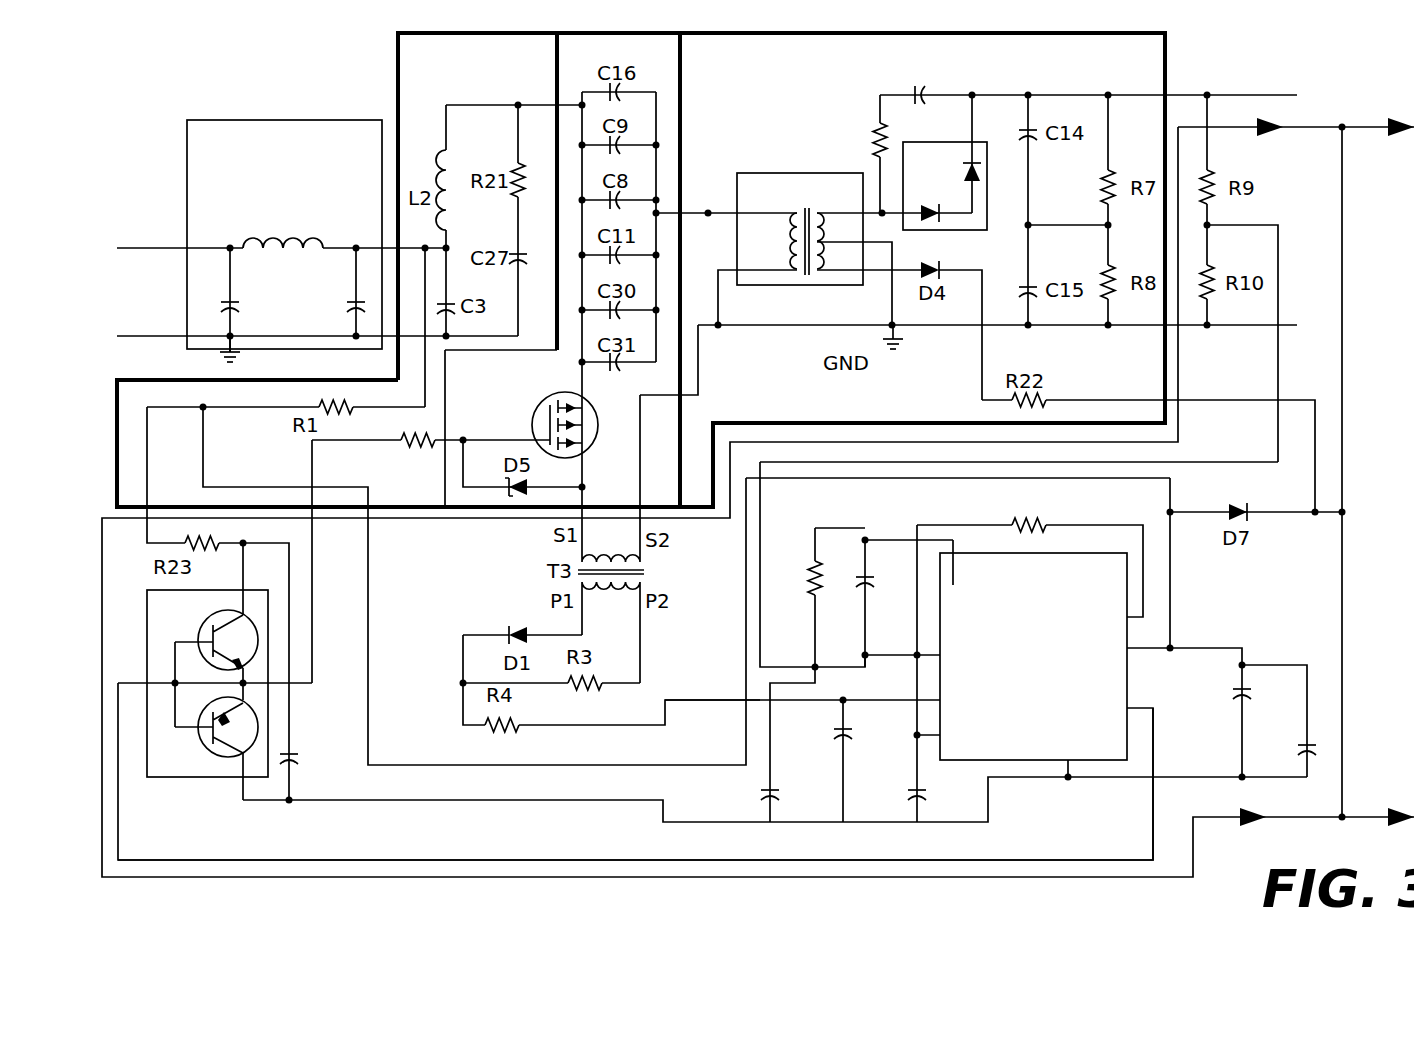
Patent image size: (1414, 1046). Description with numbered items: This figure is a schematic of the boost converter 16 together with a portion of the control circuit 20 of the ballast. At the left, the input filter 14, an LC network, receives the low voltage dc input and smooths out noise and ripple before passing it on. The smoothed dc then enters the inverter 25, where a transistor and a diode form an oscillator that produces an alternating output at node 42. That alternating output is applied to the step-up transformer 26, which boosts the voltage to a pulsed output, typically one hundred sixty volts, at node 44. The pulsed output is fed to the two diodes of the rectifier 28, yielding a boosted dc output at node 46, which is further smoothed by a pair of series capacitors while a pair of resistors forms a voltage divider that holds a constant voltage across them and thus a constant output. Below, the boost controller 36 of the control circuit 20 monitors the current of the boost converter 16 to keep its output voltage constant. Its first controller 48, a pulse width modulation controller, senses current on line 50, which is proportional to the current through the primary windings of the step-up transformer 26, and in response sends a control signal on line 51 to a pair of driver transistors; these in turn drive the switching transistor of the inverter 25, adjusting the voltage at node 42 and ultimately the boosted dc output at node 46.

The input filter 14 is at (317, 216).
The boost converter 16 is at (641, 270).
The control circuit 20 is at (693, 878).
The inverter 25 is at (467, 522).
The step-up transformer 26 is at (797, 173).
The rectifier 28 is at (987, 200).
The boost controller 36 is at (712, 701).
The node 42 is at (708, 213).
The node 44 is at (882, 213).
The node 46 is at (975, 93).
The first controller 48 is at (1038, 656).
The line 50 is at (683, 700).
The line 51 is at (660, 860).